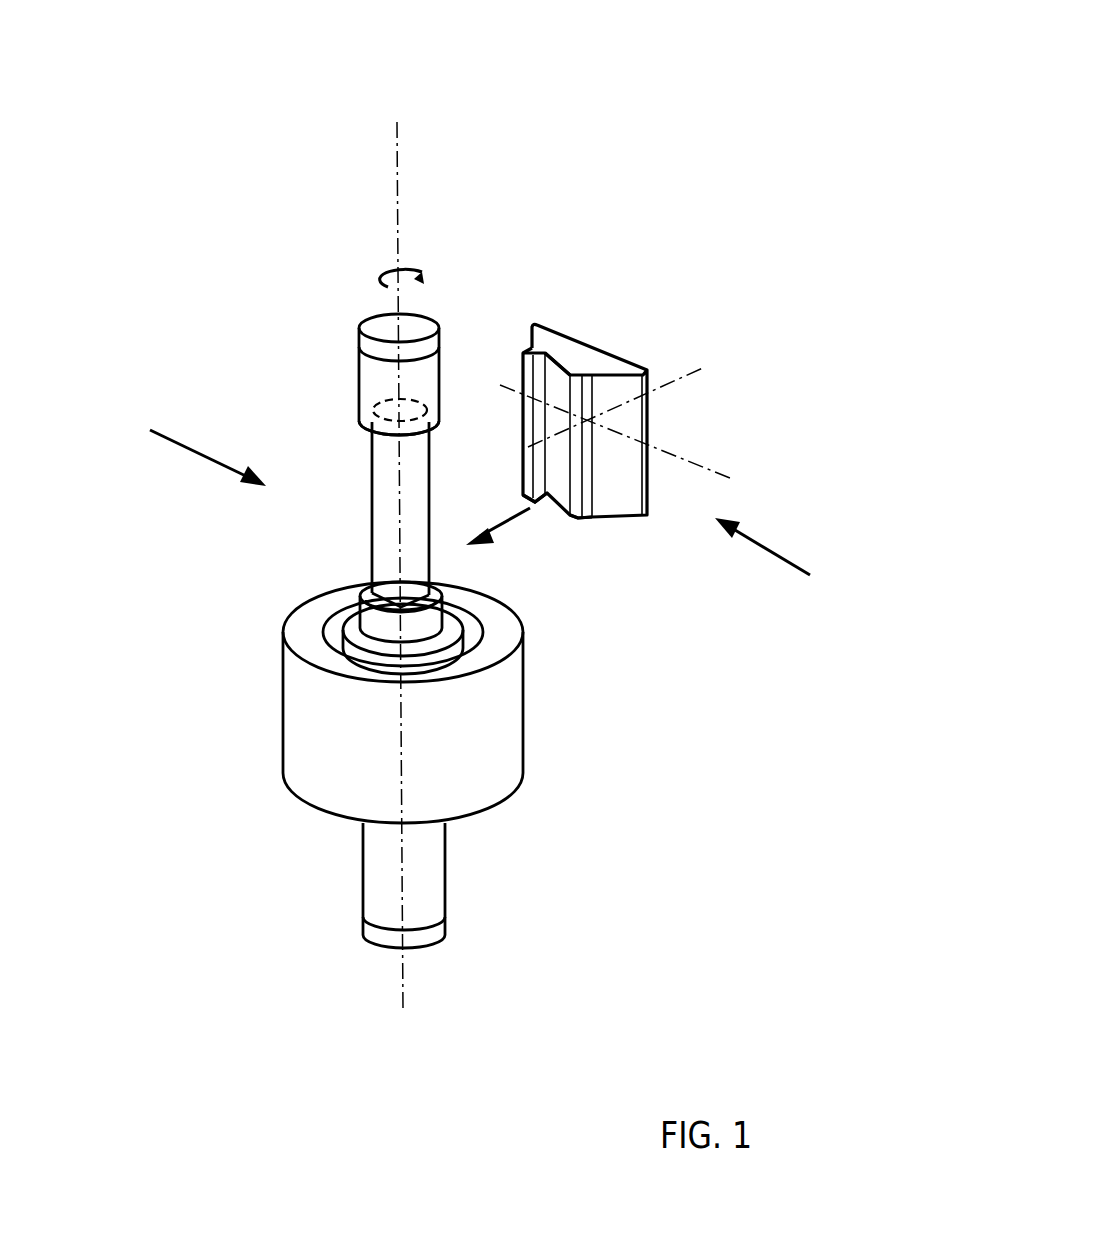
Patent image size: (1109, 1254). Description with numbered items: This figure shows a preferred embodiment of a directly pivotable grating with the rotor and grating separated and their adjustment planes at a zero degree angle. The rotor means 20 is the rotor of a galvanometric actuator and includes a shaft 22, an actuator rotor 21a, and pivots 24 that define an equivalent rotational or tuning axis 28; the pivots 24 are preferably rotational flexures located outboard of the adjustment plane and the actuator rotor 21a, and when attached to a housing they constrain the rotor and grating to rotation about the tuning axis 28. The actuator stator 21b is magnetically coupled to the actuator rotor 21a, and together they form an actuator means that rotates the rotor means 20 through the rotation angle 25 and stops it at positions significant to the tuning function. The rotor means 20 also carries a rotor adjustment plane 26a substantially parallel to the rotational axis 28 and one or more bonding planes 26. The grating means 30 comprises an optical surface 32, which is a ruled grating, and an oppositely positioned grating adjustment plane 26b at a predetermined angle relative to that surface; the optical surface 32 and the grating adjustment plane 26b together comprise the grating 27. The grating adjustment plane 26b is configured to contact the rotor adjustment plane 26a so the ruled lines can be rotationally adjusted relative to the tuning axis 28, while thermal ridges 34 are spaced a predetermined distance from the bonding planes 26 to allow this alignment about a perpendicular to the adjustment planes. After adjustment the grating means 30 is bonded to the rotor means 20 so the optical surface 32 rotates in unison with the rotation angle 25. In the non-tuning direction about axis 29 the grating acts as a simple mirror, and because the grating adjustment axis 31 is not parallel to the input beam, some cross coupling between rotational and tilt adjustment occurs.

The rotor means 20 is at (183, 448).
The actuator rotor 21a is at (269, 599).
The actuator stator 21b is at (289, 702).
The shaft 22 is at (600, 849).
The pivots 24 is at (595, 917).
The rotation angle θ 25 is at (249, 173).
The bonding planes 26 is at (415, 498).
The rotor adjustment plane 26a is at (589, 217).
The grating adjustment plane 26b is at (698, 218).
The grating 27 is at (709, 393).
The rotational axis 28 is at (317, 514).
The non-tuning axis 29 is at (690, 463).
The grating means 30 is at (788, 561).
The grating adjustment axis 31 is at (657, 390).
The optical surface 32 is at (678, 267).
The thermal ridges 34 is at (576, 518).